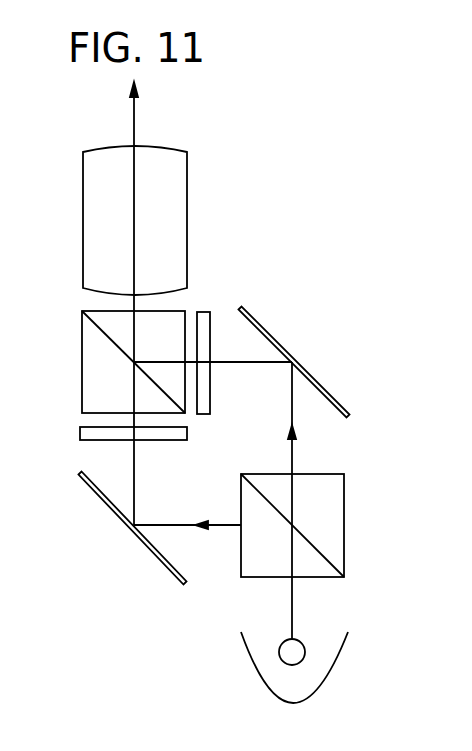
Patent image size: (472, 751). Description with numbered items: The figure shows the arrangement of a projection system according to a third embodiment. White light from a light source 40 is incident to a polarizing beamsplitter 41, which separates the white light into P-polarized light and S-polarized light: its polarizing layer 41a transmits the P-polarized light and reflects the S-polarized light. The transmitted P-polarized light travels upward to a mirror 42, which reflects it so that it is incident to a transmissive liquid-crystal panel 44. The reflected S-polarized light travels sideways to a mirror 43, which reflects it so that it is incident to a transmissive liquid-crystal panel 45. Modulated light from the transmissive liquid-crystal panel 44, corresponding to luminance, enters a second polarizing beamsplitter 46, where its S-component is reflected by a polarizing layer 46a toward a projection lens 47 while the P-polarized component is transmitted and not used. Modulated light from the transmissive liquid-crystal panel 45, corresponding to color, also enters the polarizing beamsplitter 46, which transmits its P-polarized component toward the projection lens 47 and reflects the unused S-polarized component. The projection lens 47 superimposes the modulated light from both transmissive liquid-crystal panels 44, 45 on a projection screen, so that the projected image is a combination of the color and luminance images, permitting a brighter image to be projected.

The light source 40 is at (338, 691).
The polarizing beamsplitter 41 is at (345, 516).
The polarizing layer 41a is at (332, 560).
The mirror 42 is at (322, 378).
The mirror 43 is at (157, 556).
The transmissive liquid-crystal panel 44 is at (203, 312).
The transmissive liquid-crystal panel 45 is at (80, 430).
The polarizing beamsplitter 46 is at (82, 364).
The polarizing layer 46a is at (92, 313).
The projection lens 47 is at (187, 192).